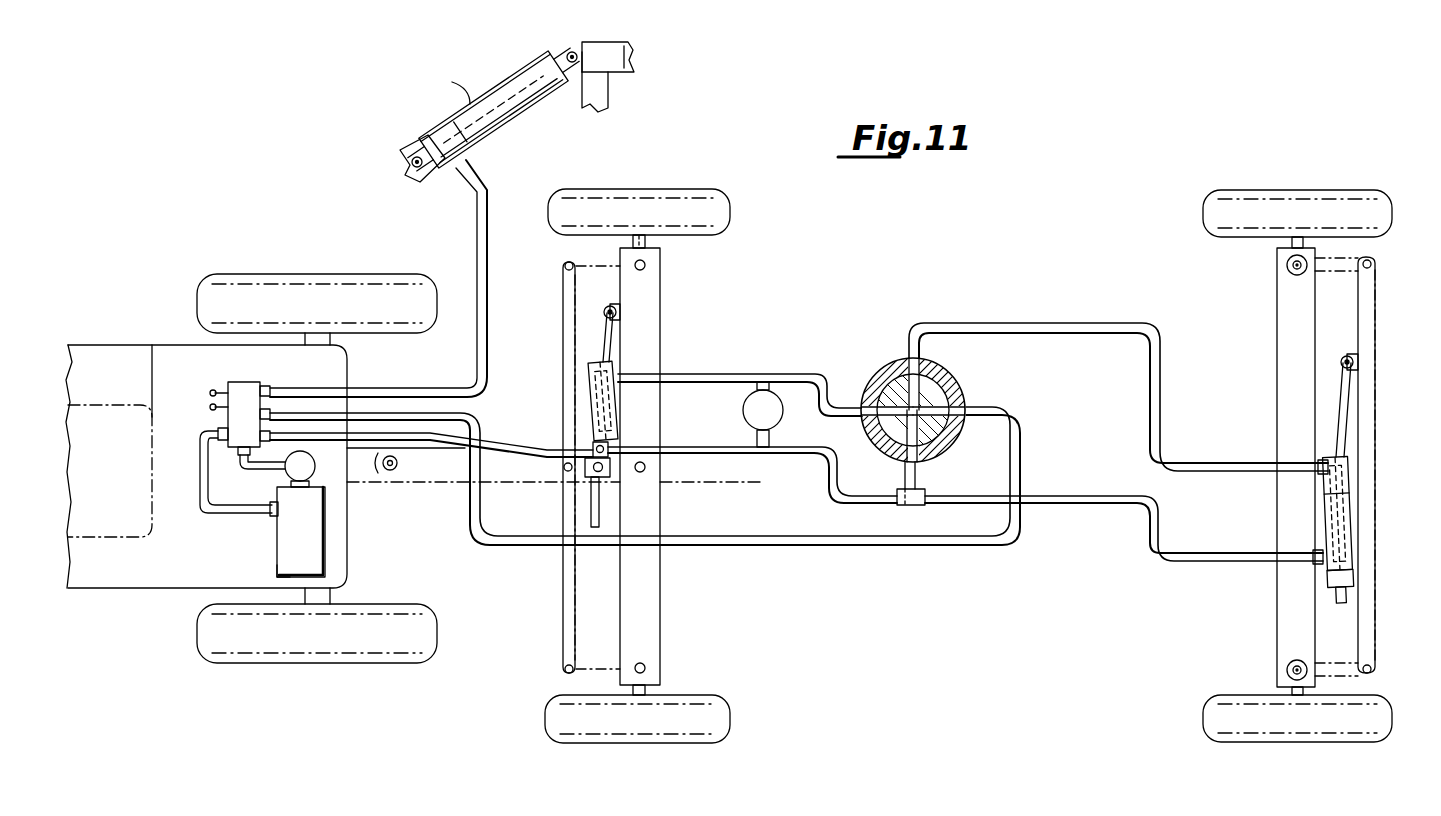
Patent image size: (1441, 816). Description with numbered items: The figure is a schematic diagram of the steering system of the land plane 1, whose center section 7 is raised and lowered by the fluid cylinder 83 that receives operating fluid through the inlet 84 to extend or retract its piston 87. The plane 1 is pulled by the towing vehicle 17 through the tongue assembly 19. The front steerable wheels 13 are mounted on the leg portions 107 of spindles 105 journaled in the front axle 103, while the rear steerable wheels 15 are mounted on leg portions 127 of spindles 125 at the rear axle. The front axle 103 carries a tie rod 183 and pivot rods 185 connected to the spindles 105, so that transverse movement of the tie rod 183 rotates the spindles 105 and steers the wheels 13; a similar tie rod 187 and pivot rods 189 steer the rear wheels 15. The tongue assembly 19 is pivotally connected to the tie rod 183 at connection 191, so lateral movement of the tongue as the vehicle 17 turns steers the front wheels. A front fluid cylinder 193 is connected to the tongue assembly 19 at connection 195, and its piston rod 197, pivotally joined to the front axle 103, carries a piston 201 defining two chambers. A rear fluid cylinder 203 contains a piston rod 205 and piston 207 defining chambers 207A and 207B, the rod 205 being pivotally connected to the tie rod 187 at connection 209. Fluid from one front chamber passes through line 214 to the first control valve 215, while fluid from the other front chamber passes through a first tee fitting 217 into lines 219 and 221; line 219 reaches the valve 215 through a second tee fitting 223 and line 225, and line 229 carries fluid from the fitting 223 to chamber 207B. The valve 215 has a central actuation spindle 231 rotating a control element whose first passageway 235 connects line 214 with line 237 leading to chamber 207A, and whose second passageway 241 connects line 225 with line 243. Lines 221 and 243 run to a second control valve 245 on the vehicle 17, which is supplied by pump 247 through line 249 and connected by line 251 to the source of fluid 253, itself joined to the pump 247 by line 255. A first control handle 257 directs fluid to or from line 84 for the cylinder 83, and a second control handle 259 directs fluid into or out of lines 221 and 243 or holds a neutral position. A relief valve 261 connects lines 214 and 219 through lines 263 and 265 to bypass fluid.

The land plane 1 is at (802, 268).
The center section 7 is at (610, 42).
The front steerable wheels 13 is at (645, 197).
The rear steerable wheels 15 is at (1228, 197).
The towing vehicle 17 is at (283, 274).
The tongue assembly 19 is at (425, 483).
The fluid cylinder 83 is at (508, 80).
The inlet 84 is at (477, 232).
The extensible piston 87 is at (505, 125).
The front axle 103 is at (653, 292).
The spindles 105 is at (647, 265).
The leg portions 107 is at (648, 239).
The spindles 125 is at (1287, 265).
The leg portions 127 is at (1290, 243).
The tie rod 183 is at (562, 322).
The pivot rods 185 is at (592, 262).
The tie rod 187 is at (1367, 290).
The pivot rods 189 is at (1340, 262).
The pivotal connection 191 is at (566, 472).
The front fluid cylinder 193 is at (623, 388).
The connection 195 is at (606, 476).
The piston rod 197 is at (600, 338).
The piston 201 is at (598, 384).
The rear fluid cylinder 203 is at (1335, 470).
The piston rod 205 is at (1348, 410).
The piston 207 is at (1374, 529).
The chamber 207A is at (1336, 493).
The chamber 207B is at (1340, 586).
The pivotal connection 209 is at (1344, 358).
The line 214 is at (718, 373).
The first control valve 215 is at (914, 413).
The first tee fitting 217 is at (612, 447).
The line 219 is at (693, 447).
The line 221 is at (378, 432).
The second tee fitting 223 is at (915, 378).
The line 225 is at (918, 481).
The line 229 is at (1085, 495).
The central actuation spindle 231 is at (940, 395).
The first passageway 235 is at (872, 372).
The line 237 is at (1090, 322).
The second passageway 241 is at (878, 442).
The line 243 is at (432, 412).
The second control valve 245 is at (238, 382).
The pump 247 is at (301, 532).
The line 249 is at (242, 463).
The line 251 is at (199, 495).
The source of fluid 253 is at (280, 570).
The line 255 is at (320, 483).
The first control handle 257 is at (218, 391).
The second control handle 259 is at (221, 409).
The relief valve 261 is at (782, 408).
The line 263 is at (770, 382).
The line 265 is at (767, 440).